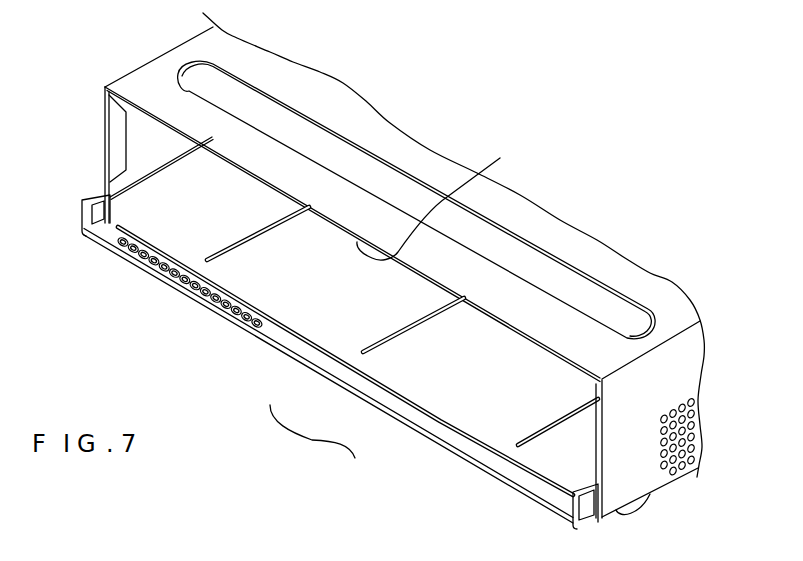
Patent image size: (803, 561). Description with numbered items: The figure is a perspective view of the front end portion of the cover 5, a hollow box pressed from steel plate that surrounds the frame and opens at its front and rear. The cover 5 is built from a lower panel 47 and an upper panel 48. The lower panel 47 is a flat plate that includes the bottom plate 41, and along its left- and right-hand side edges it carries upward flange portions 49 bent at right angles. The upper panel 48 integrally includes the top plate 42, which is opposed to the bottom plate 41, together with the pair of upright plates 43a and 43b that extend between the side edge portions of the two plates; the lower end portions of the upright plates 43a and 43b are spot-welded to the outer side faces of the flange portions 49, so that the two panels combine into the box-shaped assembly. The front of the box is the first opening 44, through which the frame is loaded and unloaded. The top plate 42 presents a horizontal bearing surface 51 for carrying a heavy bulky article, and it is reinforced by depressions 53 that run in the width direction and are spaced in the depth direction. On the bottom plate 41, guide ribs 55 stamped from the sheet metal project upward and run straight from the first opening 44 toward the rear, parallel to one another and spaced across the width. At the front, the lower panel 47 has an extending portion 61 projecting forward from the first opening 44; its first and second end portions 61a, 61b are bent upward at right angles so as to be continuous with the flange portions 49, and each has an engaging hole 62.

The cover 5 is at (312, 438).
The bottom plate 41 is at (258, 322).
The top plate 42 is at (311, 77).
The upright plate 43a is at (134, 125).
The upright plate 43b is at (683, 374).
The first opening 44 is at (441, 199).
The lower panel 47 is at (385, 373).
The upper panel 48 is at (160, 88).
The flange portion 49 is at (134, 184).
The bearing surface 51 is at (579, 250).
The depression 53 is at (353, 157).
The guide rib 55 is at (258, 224).
The extending portion 61 is at (472, 452).
The first end portion 61a is at (83, 204).
The second end portion 61b is at (573, 497).
The engaging hole 62 is at (95, 216).